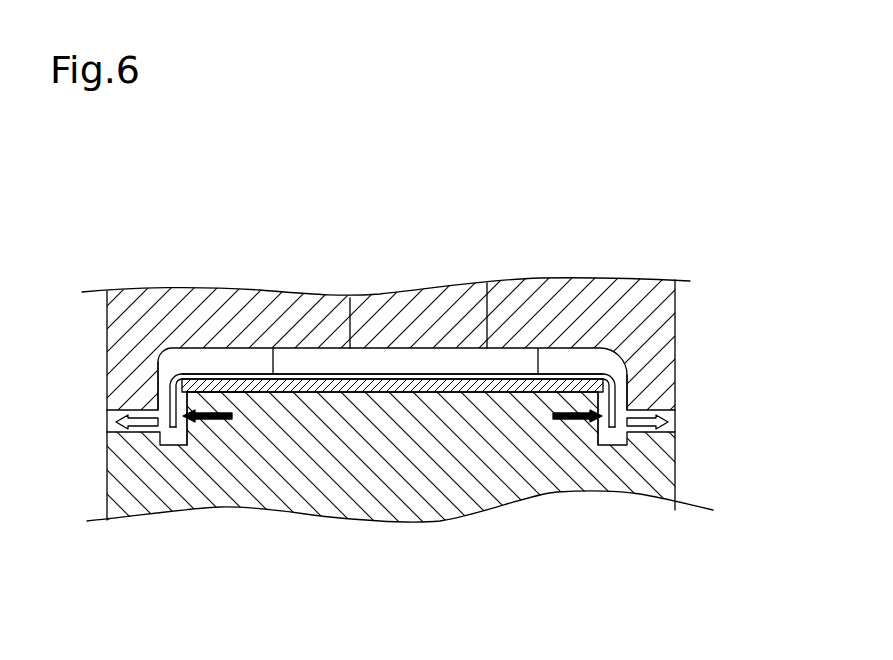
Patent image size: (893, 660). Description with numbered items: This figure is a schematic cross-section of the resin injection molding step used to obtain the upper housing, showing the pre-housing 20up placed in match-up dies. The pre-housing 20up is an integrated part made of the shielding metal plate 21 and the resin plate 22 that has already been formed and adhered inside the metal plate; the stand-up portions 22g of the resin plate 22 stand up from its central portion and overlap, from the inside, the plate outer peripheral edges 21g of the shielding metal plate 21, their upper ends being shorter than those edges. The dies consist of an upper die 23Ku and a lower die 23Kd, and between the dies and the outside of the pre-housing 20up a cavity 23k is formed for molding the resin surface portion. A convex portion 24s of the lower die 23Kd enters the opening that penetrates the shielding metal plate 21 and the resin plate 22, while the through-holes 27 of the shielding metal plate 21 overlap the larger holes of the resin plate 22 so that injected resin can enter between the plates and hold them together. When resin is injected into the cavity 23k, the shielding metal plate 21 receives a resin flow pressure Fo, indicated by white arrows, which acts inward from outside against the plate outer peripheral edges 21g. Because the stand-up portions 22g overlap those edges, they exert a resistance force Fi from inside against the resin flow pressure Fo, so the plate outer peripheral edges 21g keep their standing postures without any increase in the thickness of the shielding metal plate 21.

The pre-housing 20up is at (361, 317).
The shielding metal plate 21 is at (324, 374).
The resin plate 22 is at (292, 380).
The plate outer peripheral edges 21g is at (160, 408).
The stand-up portions 22g is at (597, 384).
The upper die 23Ku is at (455, 310).
The lower die 23Kd is at (433, 457).
The cavity 23k is at (482, 396).
The convex portion 24s is at (324, 374).
The through-holes 27 is at (245, 420).
The resistance force Fi is at (221, 424).
The resin flow pressure Fo is at (140, 432).